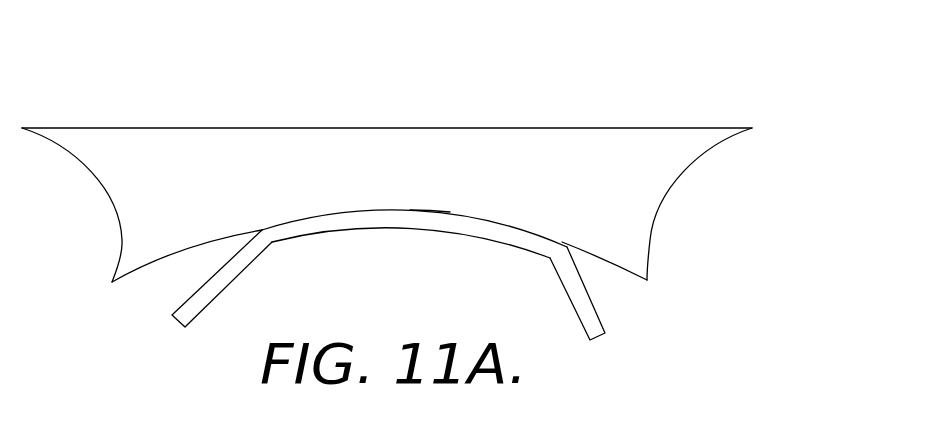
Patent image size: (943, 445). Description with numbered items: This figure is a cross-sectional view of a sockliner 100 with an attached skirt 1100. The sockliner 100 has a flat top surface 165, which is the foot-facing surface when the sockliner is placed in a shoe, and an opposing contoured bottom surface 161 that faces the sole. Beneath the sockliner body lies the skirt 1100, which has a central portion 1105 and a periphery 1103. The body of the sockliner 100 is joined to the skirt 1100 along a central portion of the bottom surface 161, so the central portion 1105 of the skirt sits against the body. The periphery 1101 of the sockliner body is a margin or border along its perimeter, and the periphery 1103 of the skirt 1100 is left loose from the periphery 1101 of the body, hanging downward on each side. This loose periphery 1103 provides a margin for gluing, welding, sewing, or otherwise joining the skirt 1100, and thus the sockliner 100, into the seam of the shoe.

The sockliner 100 is at (688, 36).
The top surface 165 is at (272, 125).
The bottom surface 161 is at (467, 217).
The central portion 1105 is at (427, 204).
The periphery 1101 is at (123, 281).
The periphery 1103 is at (186, 292).
The skirt 1100 is at (603, 322).